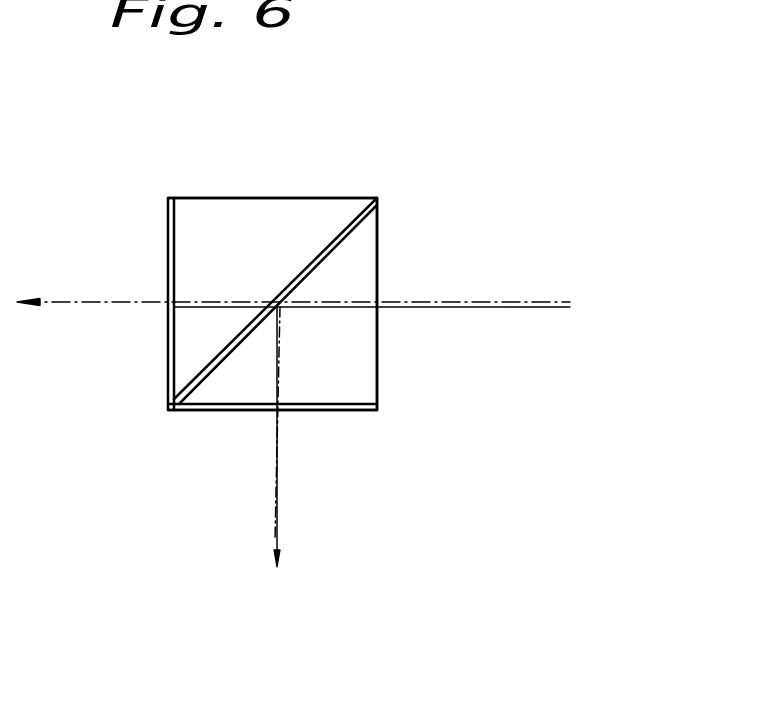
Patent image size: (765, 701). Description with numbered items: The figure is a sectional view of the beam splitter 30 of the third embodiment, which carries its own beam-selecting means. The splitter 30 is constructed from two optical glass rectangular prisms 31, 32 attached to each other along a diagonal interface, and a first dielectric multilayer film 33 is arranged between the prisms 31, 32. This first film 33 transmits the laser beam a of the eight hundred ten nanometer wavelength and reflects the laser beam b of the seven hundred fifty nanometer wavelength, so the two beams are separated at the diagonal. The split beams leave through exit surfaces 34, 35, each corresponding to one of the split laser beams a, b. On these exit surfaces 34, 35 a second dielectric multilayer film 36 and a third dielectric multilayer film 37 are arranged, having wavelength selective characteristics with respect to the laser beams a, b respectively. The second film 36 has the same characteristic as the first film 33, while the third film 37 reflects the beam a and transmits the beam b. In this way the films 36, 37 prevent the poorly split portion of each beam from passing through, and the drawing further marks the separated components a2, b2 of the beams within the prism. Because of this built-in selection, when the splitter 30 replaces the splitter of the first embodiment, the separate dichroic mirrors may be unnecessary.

The beam splitter 30 is at (303, 180).
The rectangular prism 31 is at (209, 198).
The rectangular prism 32 is at (377, 224).
The first dielectric multilayer film 33 is at (360, 206).
The exit surface 34 is at (175, 378).
The exit surface 35 is at (357, 405).
The second dielectric multilayer film 36 is at (168, 236).
The third dielectric multilayer film 37 is at (342, 411).
The laser beam a is at (72, 298).
The reflected component of beam a a2 is at (282, 352).
The laser beam b is at (270, 512).
The transmitted component of beam b b2 is at (216, 318).